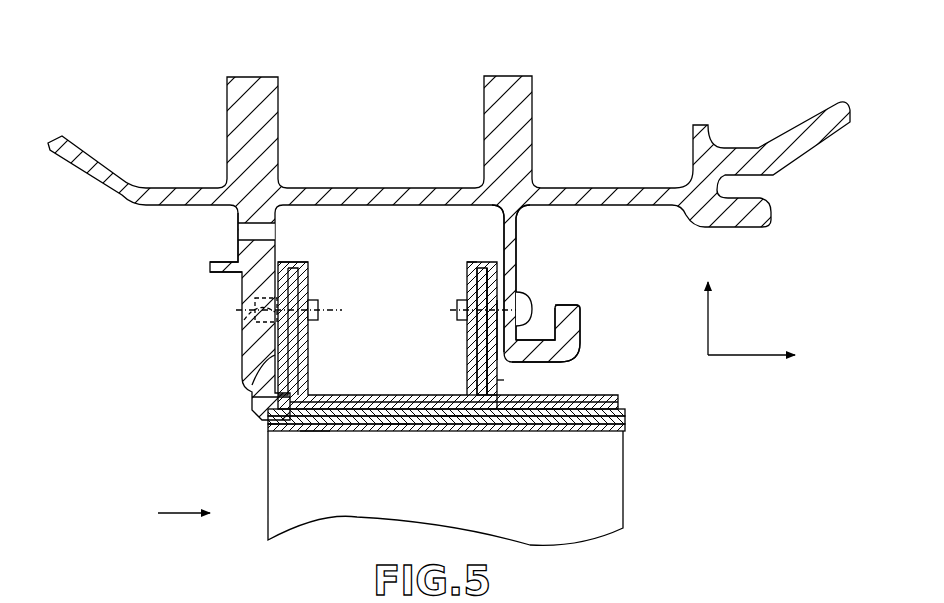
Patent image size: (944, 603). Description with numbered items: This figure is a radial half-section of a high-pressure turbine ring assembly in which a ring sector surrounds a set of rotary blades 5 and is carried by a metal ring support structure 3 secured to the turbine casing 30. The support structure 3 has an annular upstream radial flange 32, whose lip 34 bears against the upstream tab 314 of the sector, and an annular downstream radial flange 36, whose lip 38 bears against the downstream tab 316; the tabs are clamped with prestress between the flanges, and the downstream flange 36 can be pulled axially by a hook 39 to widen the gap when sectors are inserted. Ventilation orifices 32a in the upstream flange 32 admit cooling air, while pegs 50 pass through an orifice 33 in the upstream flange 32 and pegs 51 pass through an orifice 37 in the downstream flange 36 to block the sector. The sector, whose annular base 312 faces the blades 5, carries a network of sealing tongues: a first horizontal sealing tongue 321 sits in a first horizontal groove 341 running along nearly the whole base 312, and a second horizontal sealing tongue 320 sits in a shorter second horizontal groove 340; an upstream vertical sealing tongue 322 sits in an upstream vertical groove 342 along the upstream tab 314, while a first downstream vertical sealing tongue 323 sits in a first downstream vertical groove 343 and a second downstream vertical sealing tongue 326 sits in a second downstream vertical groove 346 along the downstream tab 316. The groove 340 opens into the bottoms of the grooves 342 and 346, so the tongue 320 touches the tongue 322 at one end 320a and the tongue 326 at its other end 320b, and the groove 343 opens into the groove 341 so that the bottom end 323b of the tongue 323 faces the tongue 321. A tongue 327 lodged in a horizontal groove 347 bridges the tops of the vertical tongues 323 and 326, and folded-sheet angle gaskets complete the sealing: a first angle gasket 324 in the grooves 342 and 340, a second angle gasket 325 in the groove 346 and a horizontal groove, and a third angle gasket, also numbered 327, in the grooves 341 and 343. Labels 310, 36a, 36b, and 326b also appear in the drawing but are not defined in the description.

The ring support structure 3 is at (370, 96).
The turbine casing 30 is at (264, 118).
The ventilation orifices 32a is at (246, 232).
The annular upstream radial flange 32 is at (236, 266).
The orifice 33 is at (243, 346).
The upstream vertical groove 342 is at (262, 374).
The lip 34 is at (262, 396).
The bracket 310 is at (448, 312).
The upstream tab 314 is at (309, 263).
The upstream vertical sealing tongue 322 is at (300, 330).
The pegs 50 is at (319, 306).
The pegs 51 is at (458, 305).
The second horizontal sealing tongue 320 is at (396, 395).
The end of second horizontal sealing tongue 320a is at (268, 430).
The other end of second horizontal sealing tongue 320b is at (455, 418).
The first angle gasket 324 is at (316, 433).
The first horizontal groove 341 is at (355, 432).
The first horizontal sealing tongue 321 is at (396, 425).
The second horizontal groove 340 is at (420, 420).
The inner layer end 326b is at (498, 412).
The bottom end of downstream vertical sealing tongue 323b is at (530, 430).
The annular base 312 is at (626, 428).
The rotary blades 5 is at (418, 516).
The left fillet 36b is at (492, 206).
The right fillet 36a is at (530, 207).
The horizontal groove 347 is at (470, 262).
The tongue 327 is at (489, 268).
The first downstream vertical sealing tongue 323 is at (499, 263).
The downstream tab 316 is at (478, 268).
The second downstream vertical sealing tongue 326 is at (470, 282).
The annular downstream radial flange 36 is at (518, 274).
The orifice 37 is at (528, 296).
The lip 38 is at (520, 348).
The hook 39 is at (572, 338).
The second downstream vertical groove 346 is at (472, 334).
The second angle gasket 325 is at (462, 394).
The first downstream vertical groove 343 is at (500, 372).